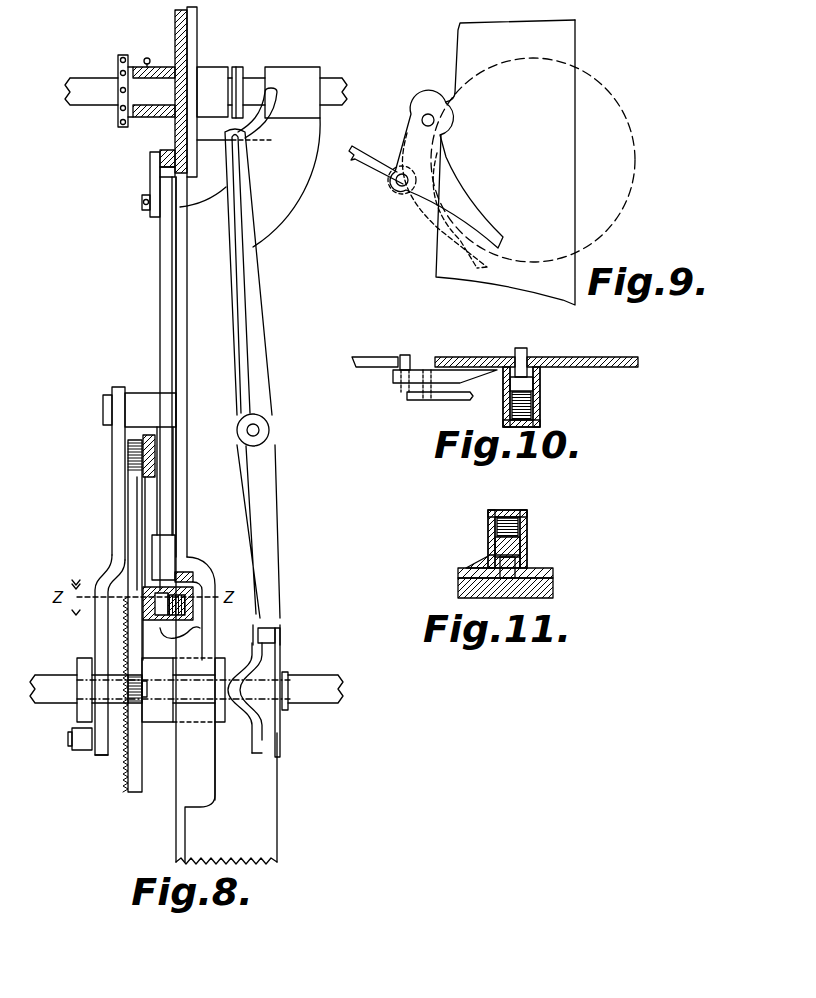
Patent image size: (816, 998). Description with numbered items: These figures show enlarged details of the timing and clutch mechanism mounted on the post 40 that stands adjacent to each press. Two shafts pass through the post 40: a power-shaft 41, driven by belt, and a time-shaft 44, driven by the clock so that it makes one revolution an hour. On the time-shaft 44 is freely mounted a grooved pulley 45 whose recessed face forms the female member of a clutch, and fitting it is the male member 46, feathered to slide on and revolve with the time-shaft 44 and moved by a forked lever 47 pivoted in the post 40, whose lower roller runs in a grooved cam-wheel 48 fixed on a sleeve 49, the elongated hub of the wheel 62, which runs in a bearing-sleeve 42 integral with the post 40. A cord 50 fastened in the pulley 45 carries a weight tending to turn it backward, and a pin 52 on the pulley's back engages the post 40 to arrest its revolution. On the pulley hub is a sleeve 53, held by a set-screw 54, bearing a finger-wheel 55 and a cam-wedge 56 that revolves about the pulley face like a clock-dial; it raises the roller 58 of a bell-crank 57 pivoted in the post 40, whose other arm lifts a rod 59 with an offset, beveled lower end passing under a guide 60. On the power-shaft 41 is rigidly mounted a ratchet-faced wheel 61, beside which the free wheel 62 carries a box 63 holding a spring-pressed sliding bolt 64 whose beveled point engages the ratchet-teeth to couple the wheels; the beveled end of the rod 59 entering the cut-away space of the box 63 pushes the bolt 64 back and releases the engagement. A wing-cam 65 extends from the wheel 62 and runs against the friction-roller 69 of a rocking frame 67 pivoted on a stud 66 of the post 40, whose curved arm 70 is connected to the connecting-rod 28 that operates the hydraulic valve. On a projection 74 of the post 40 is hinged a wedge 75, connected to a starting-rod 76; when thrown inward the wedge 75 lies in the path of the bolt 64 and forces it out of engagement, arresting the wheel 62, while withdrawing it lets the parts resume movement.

In FIG. 8, the connecting-rod 28 is at (72, 733).
In FIG. 8, the post 40 is at (238, 520).
In FIG. 9, the post 40 is at (521, 162).
In FIG. 8, the power-shaft 41 is at (203, 689).
In FIG. 8, the bearing-sleeve 42 is at (217, 725).
In FIG. 8, the time-shaft 44 is at (220, 92).
In FIG. 8, the grooved pulley 45 is at (170, 91).
In FIG. 8, the male member 46 is at (205, 92).
In FIG. 8, the forked lever 47 is at (274, 357).
In FIG. 8, the grooved cam-wheel 48 is at (277, 637).
In FIG. 8, the sleeve 49 is at (290, 668).
In FIG. 8, the cord 50 is at (187, 190).
In FIG. 8, the pin 52 is at (206, 142).
In FIG. 8, the sleeve 53 is at (150, 117).
In FIG. 8, the set-screw 54 is at (149, 52).
In FIG. 8, the finger-wheel 55 is at (118, 59).
In FIG. 8, the cam-wedge 56 is at (163, 172).
In FIG. 8, the bell-crank 57 is at (150, 172).
In FIG. 8, the roller 58 is at (160, 152).
In FIG. 8, the rod 59 is at (151, 383).
In FIG. 11, the rod 59 is at (482, 560).
In FIG. 8, the guide 60 is at (175, 548).
In FIG. 8, the wheel 61 is at (100, 757).
In FIG. 9, the wheel 61 is at (635, 137).
In FIG. 11, the wheel 61 is at (522, 588).
In FIG. 8, the wheel 62 is at (142, 752).
In FIG. 10, the wheel 62 is at (536, 371).
In FIG. 11, the wheel 62 is at (553, 568).
In FIG. 8, the box 63 is at (193, 612).
In FIG. 10, the box 63 is at (545, 407).
In FIG. 11, the box 63 is at (527, 528).
In FIG. 8, the sliding bolt 64 is at (177, 609).
In FIG. 10, the sliding bolt 64 is at (533, 381).
In FIG. 11, the sliding bolt 64 is at (520, 547).
In FIG. 8, the wing-cam 65 is at (112, 505).
In FIG. 8, the stud 66 is at (127, 410).
In FIG. 8, the rocking frame 67 is at (105, 548).
In FIG. 8, the friction-roller 69 is at (147, 689).
In FIG. 8, the curved arm 70 is at (90, 641).
In FIG. 9, the projection 74 is at (446, 175).
In FIG. 10, the projection 74 is at (440, 405).
In FIG. 9, the wedge 75 is at (410, 150).
In FIG. 10, the wedge 75 is at (445, 385).
In FIG. 9, the rod 76 is at (374, 166).
In FIG. 10, the rod 76 is at (381, 365).